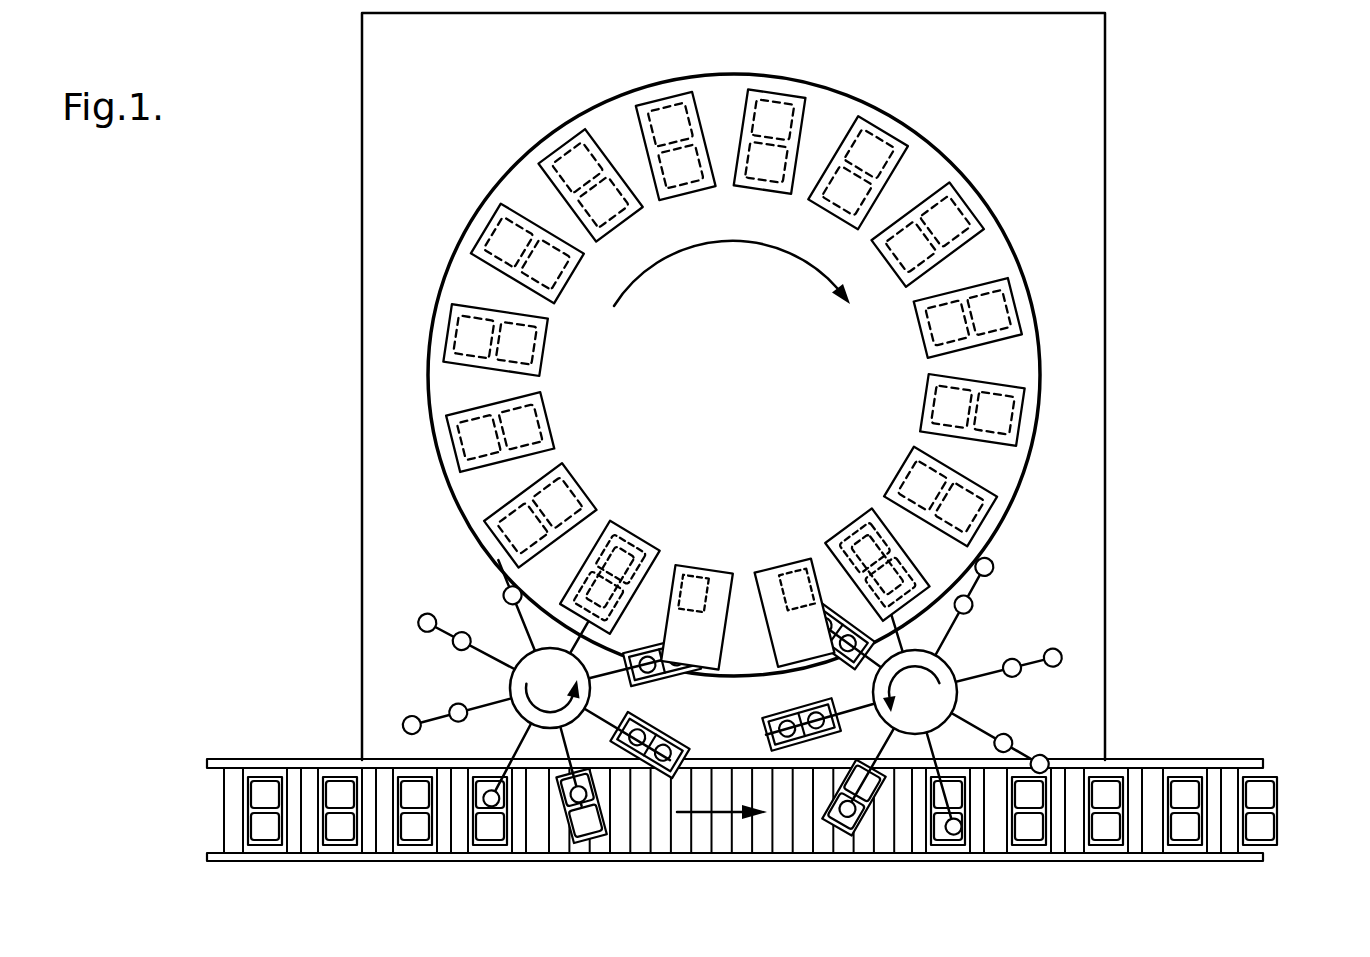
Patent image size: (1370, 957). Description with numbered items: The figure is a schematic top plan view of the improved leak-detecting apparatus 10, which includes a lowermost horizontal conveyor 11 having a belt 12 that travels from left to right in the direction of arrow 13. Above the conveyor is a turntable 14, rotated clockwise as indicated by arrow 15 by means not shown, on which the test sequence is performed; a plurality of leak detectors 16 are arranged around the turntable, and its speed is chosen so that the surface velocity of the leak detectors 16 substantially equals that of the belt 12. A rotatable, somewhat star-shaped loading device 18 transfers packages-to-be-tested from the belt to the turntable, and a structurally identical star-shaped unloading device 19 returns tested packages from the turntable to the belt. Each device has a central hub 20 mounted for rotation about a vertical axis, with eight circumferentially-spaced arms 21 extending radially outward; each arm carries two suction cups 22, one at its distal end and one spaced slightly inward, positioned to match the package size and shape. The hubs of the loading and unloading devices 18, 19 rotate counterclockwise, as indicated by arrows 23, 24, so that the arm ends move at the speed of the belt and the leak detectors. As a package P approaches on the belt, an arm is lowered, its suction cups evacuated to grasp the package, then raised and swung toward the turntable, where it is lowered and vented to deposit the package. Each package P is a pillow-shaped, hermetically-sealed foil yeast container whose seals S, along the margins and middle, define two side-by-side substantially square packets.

The apparatus 10 is at (1210, 306).
The conveyor 11 is at (614, 874).
The belt 12 is at (760, 846).
The arrow 13 is at (723, 814).
The turntable 14 is at (962, 140).
The arrow 15 is at (731, 242).
The leak detectors 16 is at (555, 129).
The loading device 18 is at (488, 683).
The unloading device 19 is at (979, 692).
The central hub 20 is at (519, 716).
The arms 21 is at (497, 650).
The suction cups 22 is at (449, 626).
The arrow 23 is at (548, 716).
The arrow 24 is at (916, 662).
The package P is at (515, 224).
The package seals S is at (272, 780).